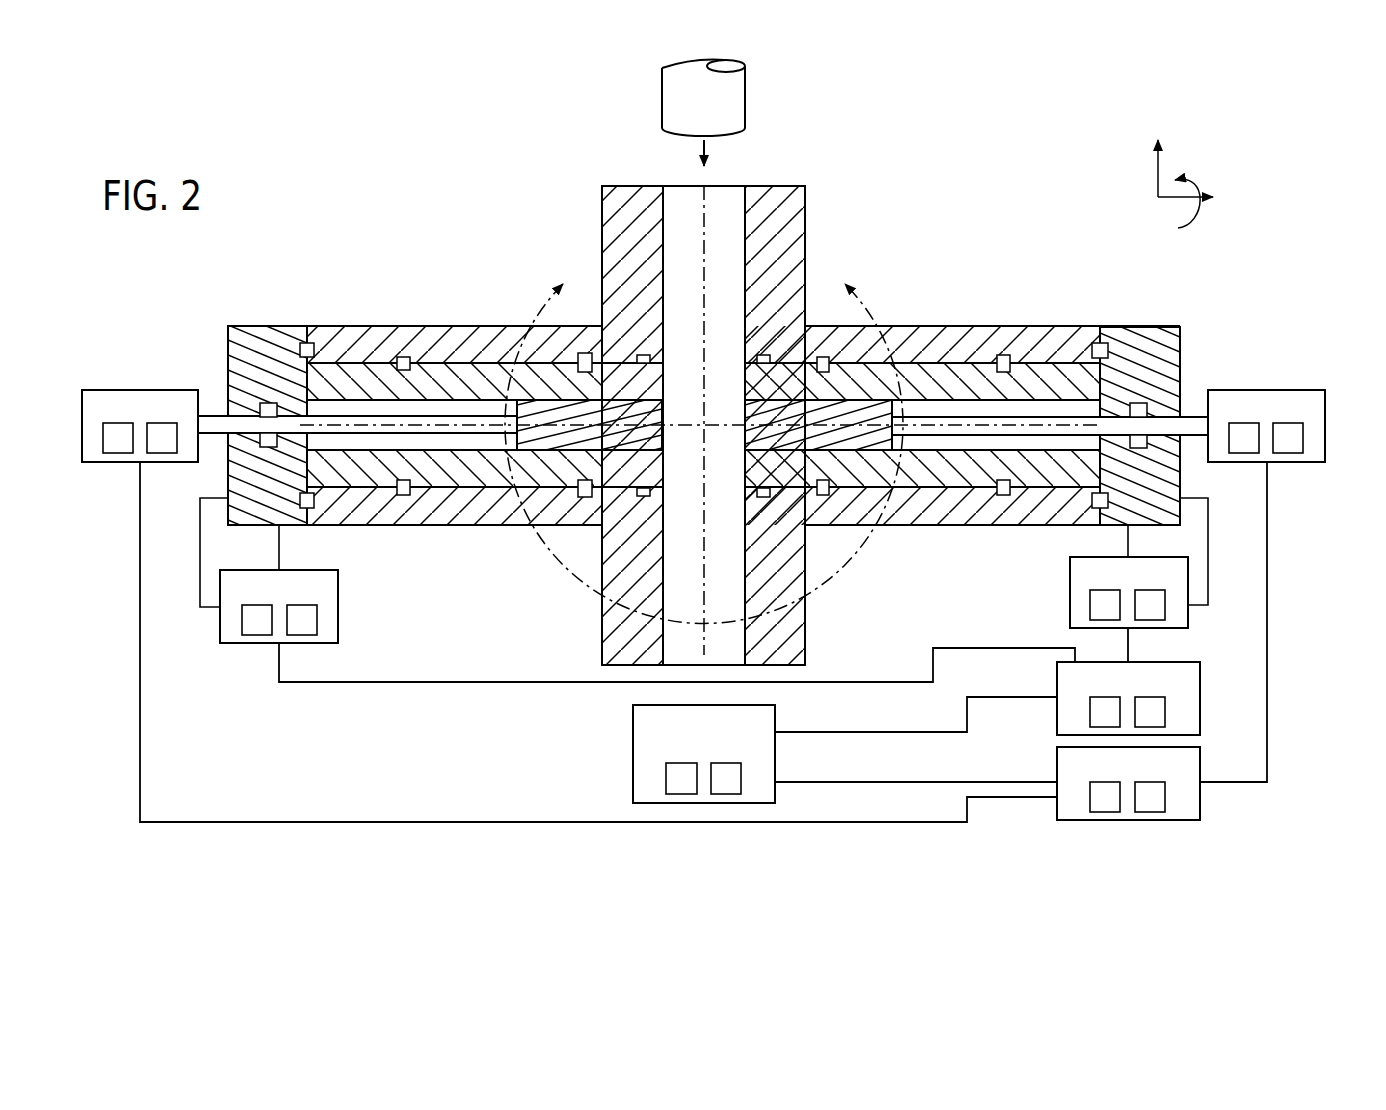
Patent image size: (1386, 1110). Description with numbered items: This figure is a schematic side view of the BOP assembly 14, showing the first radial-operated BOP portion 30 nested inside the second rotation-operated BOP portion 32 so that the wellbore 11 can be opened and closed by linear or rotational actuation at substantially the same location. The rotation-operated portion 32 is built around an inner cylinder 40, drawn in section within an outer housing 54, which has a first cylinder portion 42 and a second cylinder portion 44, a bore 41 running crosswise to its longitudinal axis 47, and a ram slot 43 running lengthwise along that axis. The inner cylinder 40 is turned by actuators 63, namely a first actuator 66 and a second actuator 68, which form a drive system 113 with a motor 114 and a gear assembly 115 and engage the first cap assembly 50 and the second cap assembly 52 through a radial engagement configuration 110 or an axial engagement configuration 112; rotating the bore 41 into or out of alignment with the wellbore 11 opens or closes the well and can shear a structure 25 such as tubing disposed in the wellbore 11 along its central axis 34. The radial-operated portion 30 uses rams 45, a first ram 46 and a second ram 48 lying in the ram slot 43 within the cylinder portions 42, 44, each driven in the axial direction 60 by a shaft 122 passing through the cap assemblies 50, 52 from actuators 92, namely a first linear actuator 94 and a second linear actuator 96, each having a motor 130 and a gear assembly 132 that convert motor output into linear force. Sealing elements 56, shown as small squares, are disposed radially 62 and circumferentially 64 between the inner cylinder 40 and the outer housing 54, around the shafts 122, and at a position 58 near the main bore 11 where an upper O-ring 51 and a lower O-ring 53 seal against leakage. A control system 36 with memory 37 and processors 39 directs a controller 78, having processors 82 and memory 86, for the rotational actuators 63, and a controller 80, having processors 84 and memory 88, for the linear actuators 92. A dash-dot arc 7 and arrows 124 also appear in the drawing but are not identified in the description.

The rotation path 7 is at (704, 443).
The wellbore 11 is at (690, 186).
The BOP assembly 14 is at (1003, 229).
The structure 25 is at (747, 93).
The first radial-operated BOP portion 30 is at (96, 372).
The second rotation-operated BOP portion 32 is at (228, 682).
The central axis 34 is at (705, 212).
The control system 36 is at (633, 752).
The memory 37 is at (666, 777).
The processors 39 is at (741, 777).
The inner cylinder 40 is at (393, 276).
The bore 41 is at (750, 466).
The first cylinder portion 42 is at (455, 375).
The ram slot 43 is at (505, 398).
The second cylinder portion 44 is at (957, 352).
The rams 45 is at (449, 550).
The first ram 46 is at (660, 434).
The longitudinal axis 47 is at (430, 413).
The second ram 48 is at (745, 441).
The first cap assembly 50 is at (262, 325).
The upper annular seal 51 is at (790, 355).
The second cap assembly 52 is at (1145, 327).
The lower annular seal 53 is at (740, 505).
The outer housing 54 is at (913, 325).
The sealing elements 56 is at (265, 403).
The position 58 is at (641, 331).
The axial direction 60 is at (1180, 198).
The radial direction 62 is at (1156, 172).
The circumferential direction 64 is at (1196, 186).
The actuators 63 is at (206, 651).
The first actuator 66 is at (252, 570).
The second actuator 68 is at (1070, 588).
The controller 78 is at (1057, 685).
The controller 80 is at (1200, 800).
The processors 82 is at (1090, 712).
The processors 84 is at (1105, 812).
The memory 86 is at (1167, 712).
The memory 88 is at (1152, 812).
The actuators 92 is at (158, 383).
The first linear actuator 94 is at (140, 388).
The second linear actuator 96 is at (1275, 388).
The radial engagement configuration 110 is at (294, 552).
The axial engagement configuration 112 is at (185, 551).
The drive system 113 is at (356, 628).
The motor 114 is at (258, 637).
The gear assembly 115 is at (302, 637).
The drive shaft 122 is at (500, 405).
The actuator input 124 is at (346, 600).
The motor 130 is at (105, 455).
The gear assembly 132 is at (175, 455).